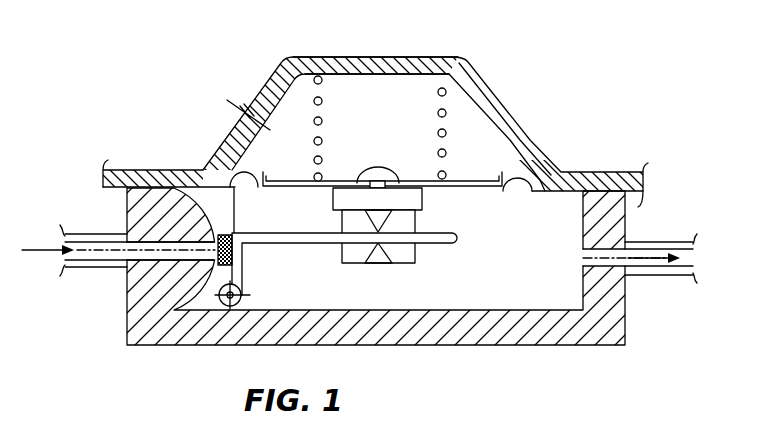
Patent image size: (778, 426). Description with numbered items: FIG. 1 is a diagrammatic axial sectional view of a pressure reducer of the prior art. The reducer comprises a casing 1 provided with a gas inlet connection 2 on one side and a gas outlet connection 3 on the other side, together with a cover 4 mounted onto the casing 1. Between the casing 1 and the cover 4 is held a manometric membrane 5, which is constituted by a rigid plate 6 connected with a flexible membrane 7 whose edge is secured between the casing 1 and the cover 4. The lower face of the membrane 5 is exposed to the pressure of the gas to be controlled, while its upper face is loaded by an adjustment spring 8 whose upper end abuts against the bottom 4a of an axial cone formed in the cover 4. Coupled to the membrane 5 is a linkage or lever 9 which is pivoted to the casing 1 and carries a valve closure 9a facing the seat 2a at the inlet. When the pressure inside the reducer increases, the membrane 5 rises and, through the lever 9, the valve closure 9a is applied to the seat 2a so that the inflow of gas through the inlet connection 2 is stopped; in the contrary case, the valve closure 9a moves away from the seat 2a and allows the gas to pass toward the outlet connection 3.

The casing 1 is at (500, 340).
The gas inlet connection 2 is at (117, 255).
The seat 2a is at (127, 203).
The gas outlet connection 3 is at (640, 262).
The cover 4 is at (497, 100).
The bottom of axial cone 4a is at (346, 80).
The manometric membrane 5 is at (480, 204).
The rigid plate 6 is at (483, 176).
The flexible membrane 7 is at (220, 190).
The adjustment spring 8 is at (444, 90).
The lever 9 is at (296, 243).
The valve closure 9a is at (232, 254).